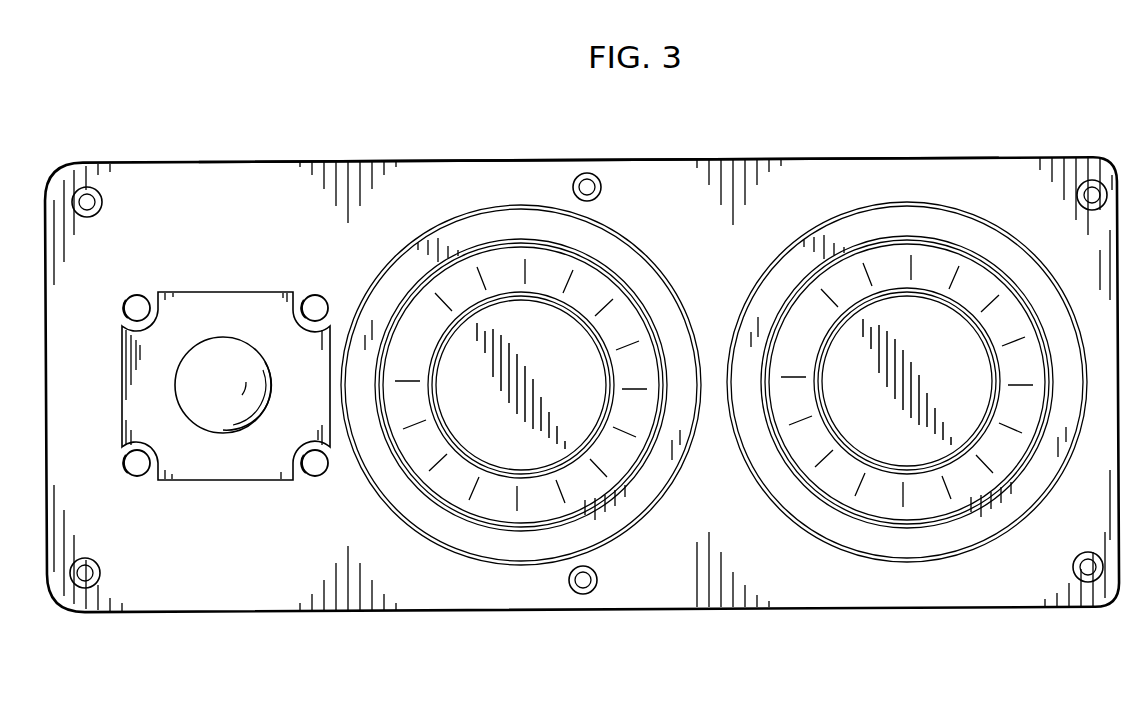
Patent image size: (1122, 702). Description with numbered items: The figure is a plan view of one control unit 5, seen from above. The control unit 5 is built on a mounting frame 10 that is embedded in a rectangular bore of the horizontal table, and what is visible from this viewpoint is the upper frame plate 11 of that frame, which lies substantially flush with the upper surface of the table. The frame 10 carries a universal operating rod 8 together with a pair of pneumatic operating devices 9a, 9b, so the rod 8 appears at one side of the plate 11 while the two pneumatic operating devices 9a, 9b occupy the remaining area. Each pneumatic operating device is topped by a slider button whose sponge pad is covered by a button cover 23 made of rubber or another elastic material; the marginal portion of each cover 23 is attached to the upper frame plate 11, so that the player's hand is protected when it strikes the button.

The control unit 5 is at (394, 189).
The universal operating rod 8 is at (225, 338).
The pneumatic operating device 9a is at (475, 540).
The pneumatic operating device 9b is at (912, 540).
The mounting frame 10 is at (893, 159).
The upper frame plate 11 is at (788, 180).
The button cover 23 is at (530, 220).